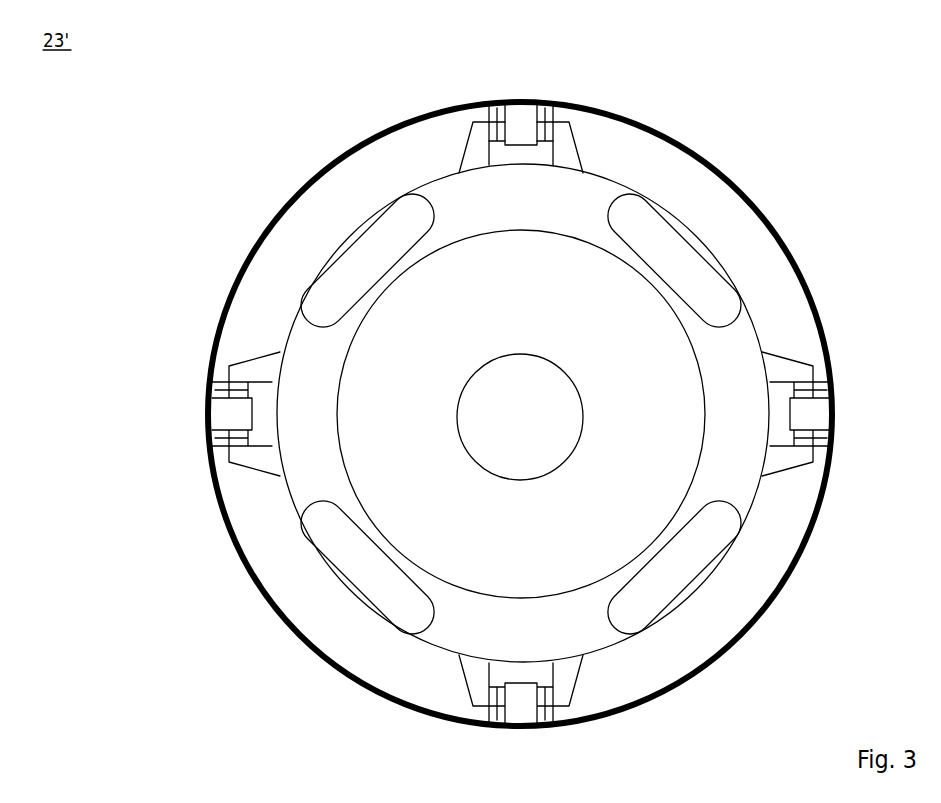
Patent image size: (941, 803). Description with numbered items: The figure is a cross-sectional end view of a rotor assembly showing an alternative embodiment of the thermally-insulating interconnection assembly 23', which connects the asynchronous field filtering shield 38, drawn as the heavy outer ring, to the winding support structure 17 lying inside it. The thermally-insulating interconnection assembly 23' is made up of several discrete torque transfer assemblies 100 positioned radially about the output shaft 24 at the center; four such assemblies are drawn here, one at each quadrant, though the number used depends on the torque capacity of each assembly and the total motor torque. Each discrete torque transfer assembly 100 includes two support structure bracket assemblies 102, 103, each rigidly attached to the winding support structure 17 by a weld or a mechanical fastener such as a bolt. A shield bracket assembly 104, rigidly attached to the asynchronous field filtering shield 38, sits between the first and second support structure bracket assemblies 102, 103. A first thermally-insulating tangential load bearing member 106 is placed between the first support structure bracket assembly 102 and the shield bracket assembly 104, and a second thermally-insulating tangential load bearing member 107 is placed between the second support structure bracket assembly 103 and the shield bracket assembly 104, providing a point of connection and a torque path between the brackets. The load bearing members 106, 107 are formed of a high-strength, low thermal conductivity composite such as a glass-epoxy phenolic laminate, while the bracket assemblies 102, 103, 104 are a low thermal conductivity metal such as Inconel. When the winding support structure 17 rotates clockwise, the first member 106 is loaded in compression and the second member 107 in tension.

The thermally-insulating interconnection assembly 23' is at (458, 357).
The asynchronous field filtering shield 38 is at (443, 107).
The winding support structure 17 is at (555, 197).
The output shaft 24 is at (525, 457).
The discrete torque transfer assembly 100 is at (521, 373).
The first support structure bracket assembly 102 is at (567, 163).
The second support structure bracket assembly 103 is at (479, 153).
The shield bracket assembly 104 is at (528, 117).
The first thermally-insulating tangential load bearing member 106 is at (545, 117).
The second thermally-insulating tangential load bearing member 107 is at (497, 117).